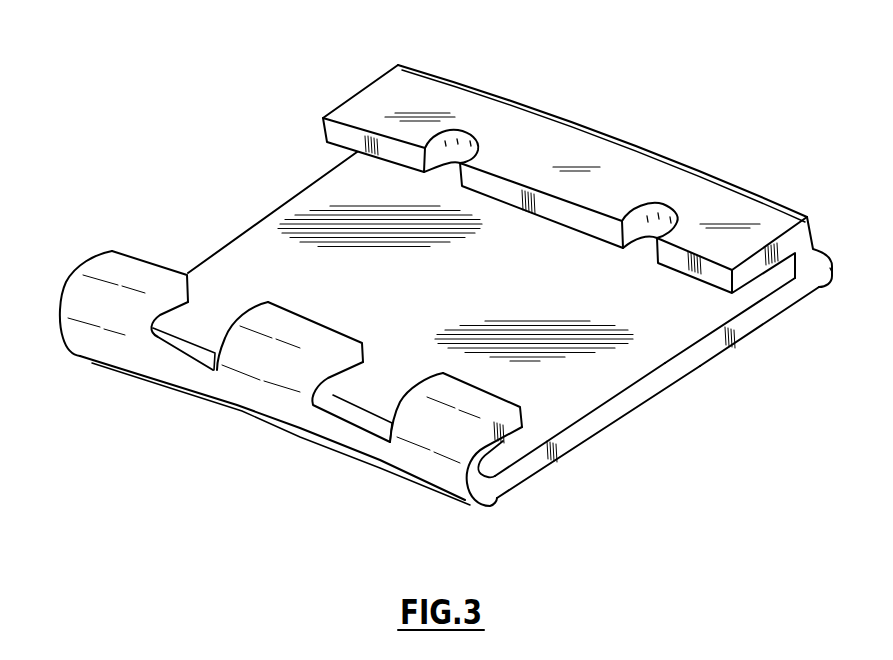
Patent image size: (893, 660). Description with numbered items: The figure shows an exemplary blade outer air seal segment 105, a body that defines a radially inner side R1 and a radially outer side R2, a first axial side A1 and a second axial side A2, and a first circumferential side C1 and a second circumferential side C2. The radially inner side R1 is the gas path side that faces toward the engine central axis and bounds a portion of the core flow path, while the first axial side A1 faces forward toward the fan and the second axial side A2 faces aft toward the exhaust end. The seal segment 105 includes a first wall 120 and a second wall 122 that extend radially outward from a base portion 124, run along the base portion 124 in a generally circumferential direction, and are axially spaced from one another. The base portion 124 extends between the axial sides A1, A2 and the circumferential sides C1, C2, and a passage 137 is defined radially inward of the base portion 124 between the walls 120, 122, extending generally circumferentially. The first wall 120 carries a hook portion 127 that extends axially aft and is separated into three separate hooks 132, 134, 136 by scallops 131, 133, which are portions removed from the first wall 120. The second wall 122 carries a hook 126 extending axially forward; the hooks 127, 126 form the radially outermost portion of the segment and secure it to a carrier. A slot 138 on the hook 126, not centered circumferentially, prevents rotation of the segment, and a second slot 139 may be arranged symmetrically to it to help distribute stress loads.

The BOAS segment 105 is at (691, 57).
The first wall 120 is at (477, 472).
The second wall 122 is at (814, 249).
The base portion 124 is at (620, 412).
The hook 126 is at (755, 268).
The hook portion 127 is at (508, 428).
The scallop 131 is at (168, 352).
The hook 132 is at (113, 270).
The scallop 133 is at (347, 414).
The hook 134 is at (286, 323).
The hook 136 is at (456, 398).
The passage 137 is at (755, 296).
The slot 138 is at (468, 133).
The second slot 139 is at (672, 210).
The first axial side A1 is at (423, 486).
The second axial side A2 is at (831, 268).
The first circumferential side C1 is at (572, 450).
The second circumferential side C2 is at (234, 236).
The radially inner side R1 is at (708, 361).
The radially outer side R2 is at (682, 355).